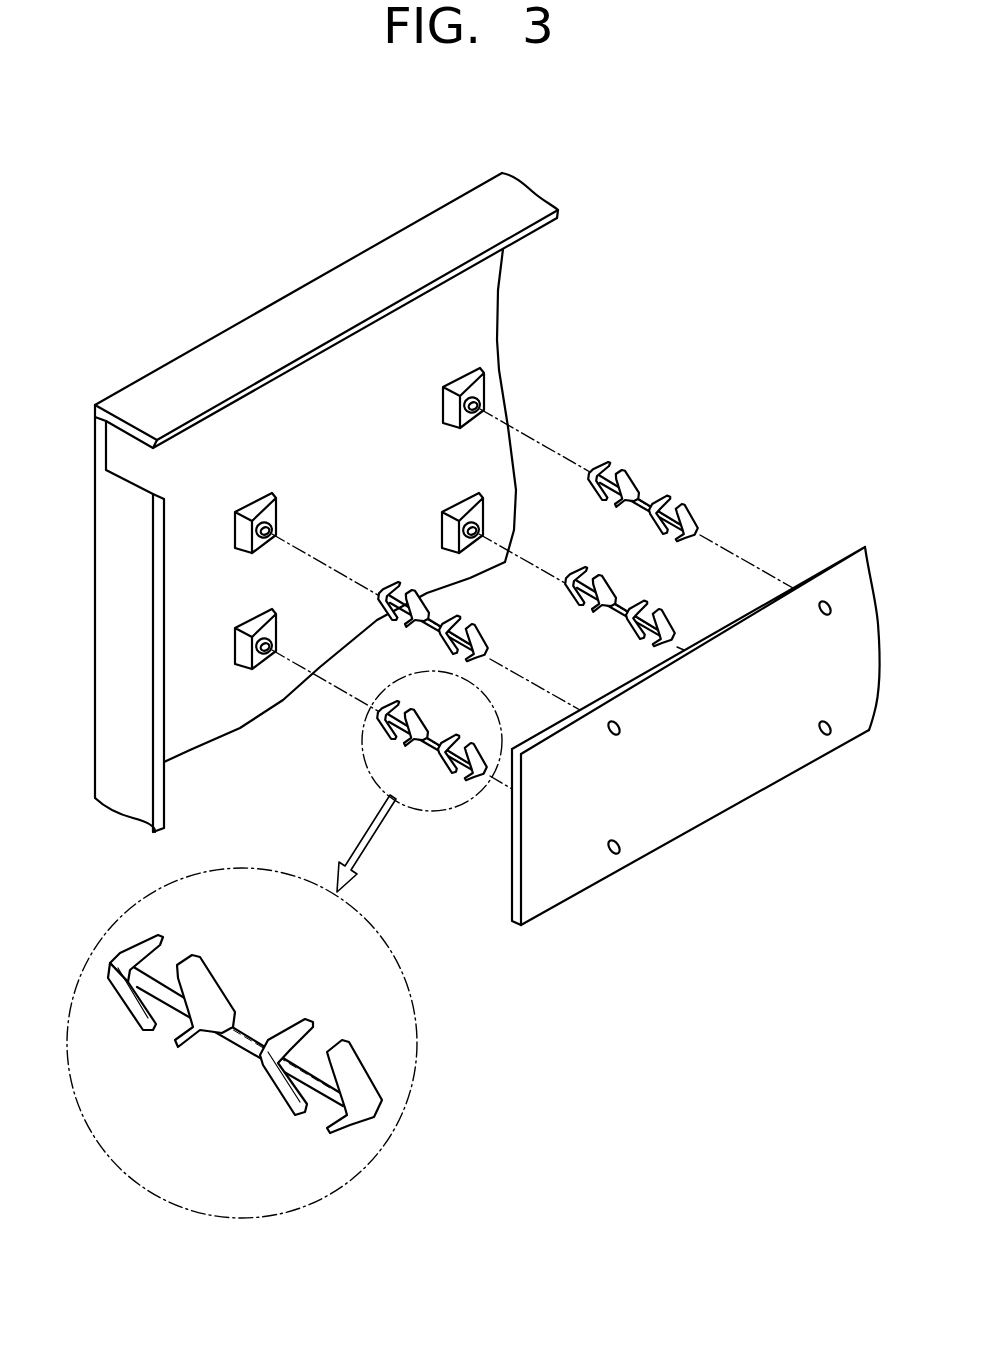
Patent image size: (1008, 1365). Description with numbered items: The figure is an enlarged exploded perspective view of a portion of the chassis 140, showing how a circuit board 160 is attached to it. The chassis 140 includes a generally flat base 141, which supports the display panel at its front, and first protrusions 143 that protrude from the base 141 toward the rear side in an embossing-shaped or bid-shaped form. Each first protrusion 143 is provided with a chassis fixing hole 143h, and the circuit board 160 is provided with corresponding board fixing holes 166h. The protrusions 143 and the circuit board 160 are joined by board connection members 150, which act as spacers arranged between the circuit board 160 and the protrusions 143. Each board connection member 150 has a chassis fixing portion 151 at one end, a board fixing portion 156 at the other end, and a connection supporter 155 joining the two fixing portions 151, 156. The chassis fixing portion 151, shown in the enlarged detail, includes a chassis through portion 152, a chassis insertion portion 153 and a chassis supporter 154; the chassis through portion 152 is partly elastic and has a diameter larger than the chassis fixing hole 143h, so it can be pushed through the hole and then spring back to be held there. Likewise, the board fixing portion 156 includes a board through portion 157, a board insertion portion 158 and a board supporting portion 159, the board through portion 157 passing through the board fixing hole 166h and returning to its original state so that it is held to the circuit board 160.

The chassis 140 is at (350, 501).
The base 141 is at (478, 313).
The first protrusion 143 is at (420, 518).
The chassis fixing hole 143h is at (532, 410).
The board connection member 150 is at (653, 492).
The chassis fixing portion 151 is at (161, 1045).
The chassis through portion 152 is at (132, 1015).
The chassis insertion portion 153 is at (163, 1007).
The chassis supporter 154 is at (198, 1040).
The connection supporter 155 is at (245, 1033).
The board fixing portion 156 is at (298, 1122).
The board through portion 157 is at (337, 1130).
The board insertion portion 158 is at (307, 1107).
The board supporting portion 159 is at (280, 1093).
The circuit board 160 is at (695, 736).
The board fixing hole 166h is at (616, 850).